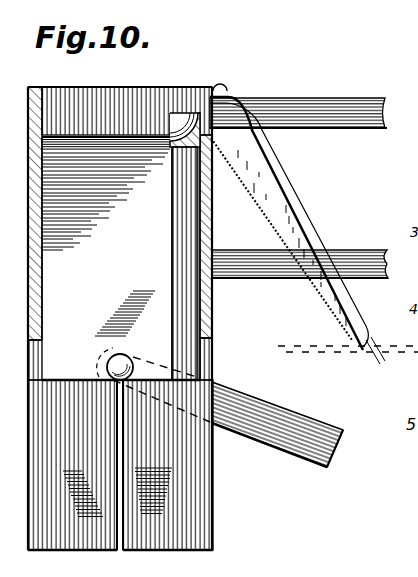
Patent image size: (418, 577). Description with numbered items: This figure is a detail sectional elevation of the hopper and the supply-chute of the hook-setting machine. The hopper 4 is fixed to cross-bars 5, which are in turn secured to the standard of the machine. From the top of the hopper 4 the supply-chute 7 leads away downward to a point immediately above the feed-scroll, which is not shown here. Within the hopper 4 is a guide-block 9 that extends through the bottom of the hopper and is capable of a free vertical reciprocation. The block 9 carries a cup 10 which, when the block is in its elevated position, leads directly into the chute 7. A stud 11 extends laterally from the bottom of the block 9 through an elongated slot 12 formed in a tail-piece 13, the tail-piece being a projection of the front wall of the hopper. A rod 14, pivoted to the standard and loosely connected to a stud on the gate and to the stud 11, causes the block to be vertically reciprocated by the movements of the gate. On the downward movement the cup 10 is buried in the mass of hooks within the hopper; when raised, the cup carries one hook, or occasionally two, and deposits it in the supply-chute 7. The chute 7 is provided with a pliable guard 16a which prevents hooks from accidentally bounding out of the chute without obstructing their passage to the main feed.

The hopper 4 is at (100, 113).
The cross-bars 5 is at (298, 115).
The supply-chute 7 is at (267, 192).
The guide-block 9 is at (106, 258).
The cup 10 is at (187, 118).
The stud 11 is at (110, 362).
The elongated slot 12 is at (120, 472).
The tail-piece 13 is at (193, 500).
The rod 14 is at (287, 425).
The guard 16a is at (343, 300).